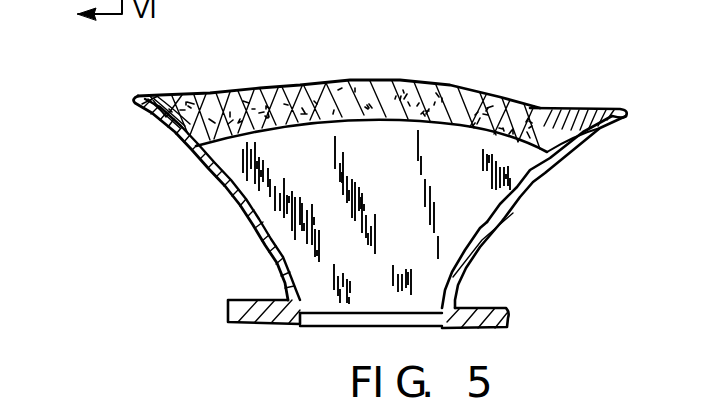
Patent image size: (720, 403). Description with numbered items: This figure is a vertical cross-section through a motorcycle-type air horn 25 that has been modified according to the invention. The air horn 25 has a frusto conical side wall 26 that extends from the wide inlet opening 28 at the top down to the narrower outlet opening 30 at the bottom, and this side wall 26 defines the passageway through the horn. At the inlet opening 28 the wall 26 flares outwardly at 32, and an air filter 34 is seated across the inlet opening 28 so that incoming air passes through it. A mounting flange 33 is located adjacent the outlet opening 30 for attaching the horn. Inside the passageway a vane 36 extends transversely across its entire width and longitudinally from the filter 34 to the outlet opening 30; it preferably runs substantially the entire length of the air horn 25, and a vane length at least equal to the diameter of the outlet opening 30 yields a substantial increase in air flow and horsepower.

The air horn 25 is at (496, 68).
The frusto conical side wall 26 is at (475, 247).
The inlet opening 28 is at (578, 100).
The outlet opening 30 is at (323, 328).
The outward flare 32 is at (600, 123).
The mounting flange 33 is at (510, 317).
The air filter 34 is at (360, 83).
The vane 36 is at (267, 187).